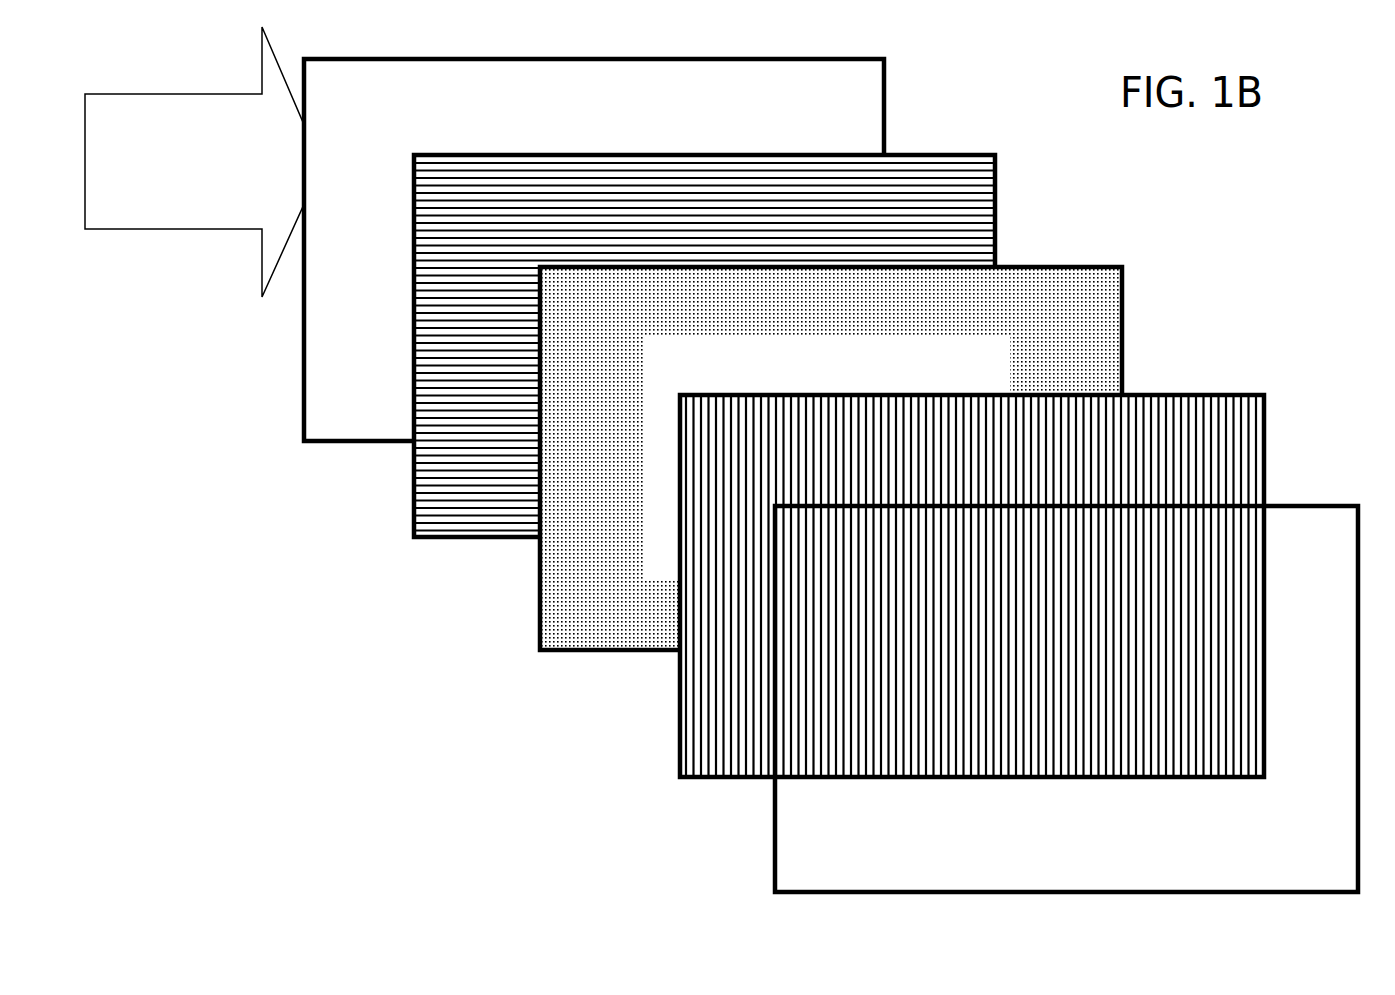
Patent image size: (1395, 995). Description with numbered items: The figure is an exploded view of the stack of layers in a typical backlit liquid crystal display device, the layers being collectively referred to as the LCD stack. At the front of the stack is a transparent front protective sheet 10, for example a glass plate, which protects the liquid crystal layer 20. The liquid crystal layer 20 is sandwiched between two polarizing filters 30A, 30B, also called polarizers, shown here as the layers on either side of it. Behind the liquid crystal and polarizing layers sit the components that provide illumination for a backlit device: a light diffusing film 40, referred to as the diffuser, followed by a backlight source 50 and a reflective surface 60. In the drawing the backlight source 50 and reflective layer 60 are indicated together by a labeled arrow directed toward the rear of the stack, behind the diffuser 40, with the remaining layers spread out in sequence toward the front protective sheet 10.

The front protective sheet 10 is at (775, 843).
The liquid crystal layer 20 is at (540, 602).
The polarizing filter 30A is at (680, 727).
The polarizing filter 30B is at (414, 490).
The light diffusing film 40 is at (304, 395).
The backlight source 50 is at (195, 162).
The reflective surface 60 is at (195, 162).